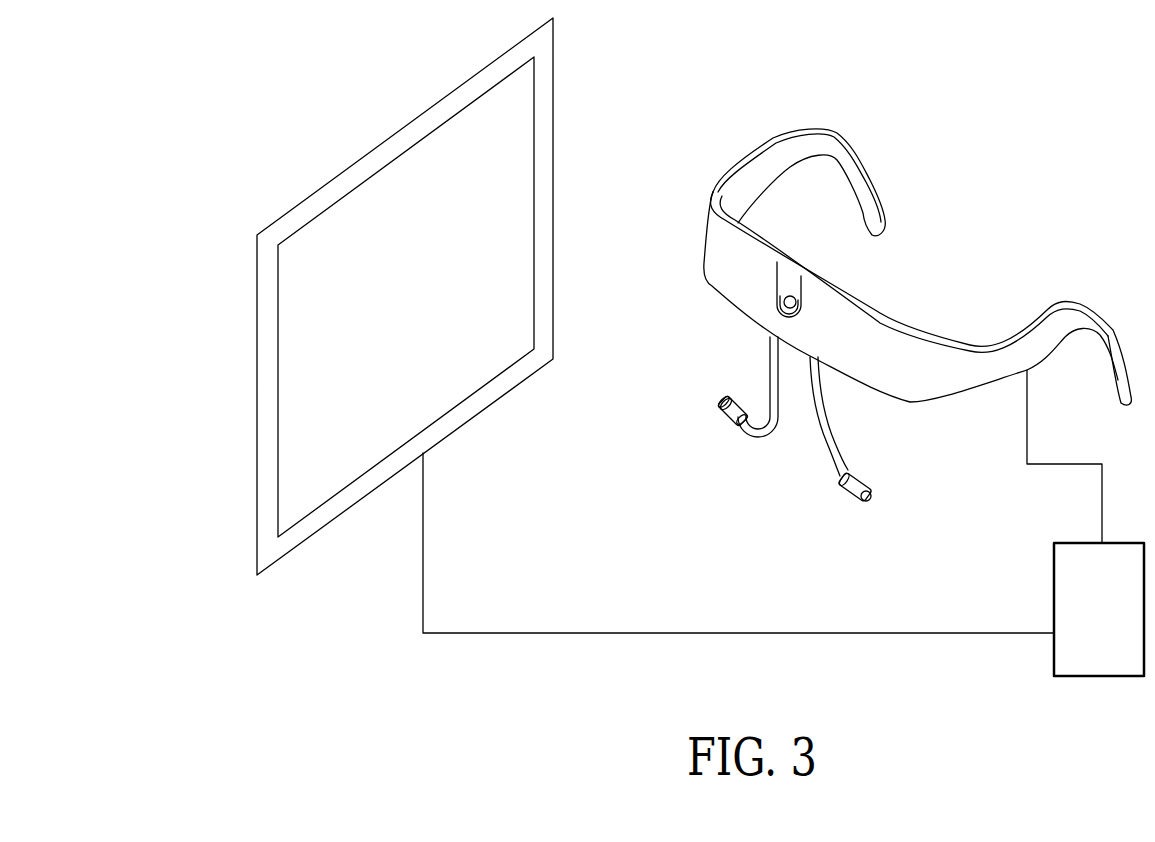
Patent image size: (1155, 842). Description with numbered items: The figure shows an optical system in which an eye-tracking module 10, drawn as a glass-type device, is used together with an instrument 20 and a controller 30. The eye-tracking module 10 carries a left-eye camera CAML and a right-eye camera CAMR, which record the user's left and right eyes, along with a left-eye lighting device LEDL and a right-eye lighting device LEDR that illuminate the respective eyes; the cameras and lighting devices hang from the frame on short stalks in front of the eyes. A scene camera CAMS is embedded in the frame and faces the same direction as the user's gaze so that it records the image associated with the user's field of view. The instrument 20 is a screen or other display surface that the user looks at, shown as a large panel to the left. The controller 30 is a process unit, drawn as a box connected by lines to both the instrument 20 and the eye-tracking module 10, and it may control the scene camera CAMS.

The eye-tracking module 10 is at (862, 167).
The instrument 20 is at (429, 318).
The controller 30 is at (1115, 622).
The scene camera CAMS is at (797, 303).
The right-eye camera CAMR is at (727, 415).
The left-eye camera CAML is at (850, 495).
The right-eye lighting device LEDR is at (723, 397).
The left-eye lighting device LEDL is at (873, 495).